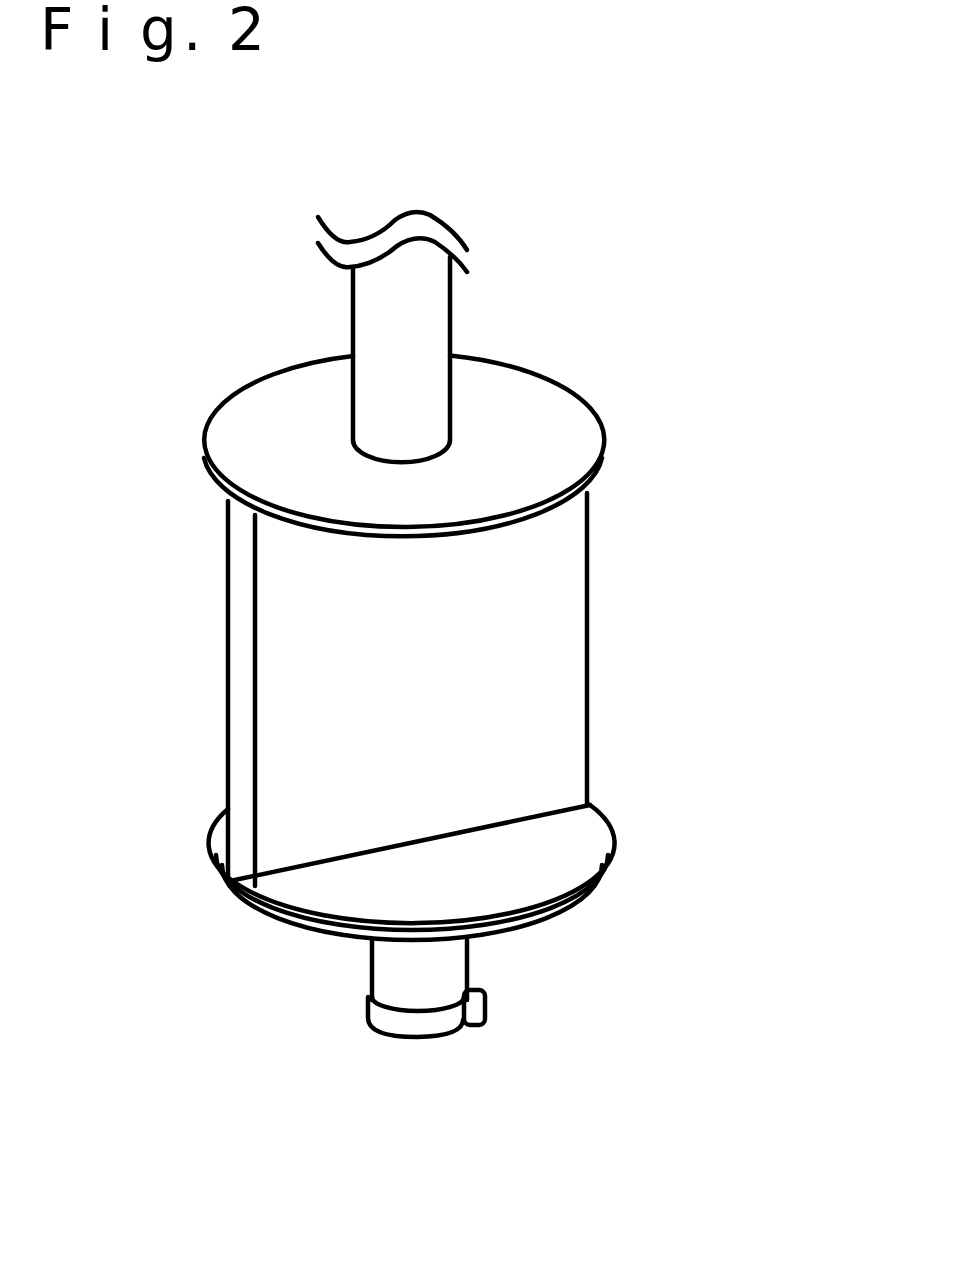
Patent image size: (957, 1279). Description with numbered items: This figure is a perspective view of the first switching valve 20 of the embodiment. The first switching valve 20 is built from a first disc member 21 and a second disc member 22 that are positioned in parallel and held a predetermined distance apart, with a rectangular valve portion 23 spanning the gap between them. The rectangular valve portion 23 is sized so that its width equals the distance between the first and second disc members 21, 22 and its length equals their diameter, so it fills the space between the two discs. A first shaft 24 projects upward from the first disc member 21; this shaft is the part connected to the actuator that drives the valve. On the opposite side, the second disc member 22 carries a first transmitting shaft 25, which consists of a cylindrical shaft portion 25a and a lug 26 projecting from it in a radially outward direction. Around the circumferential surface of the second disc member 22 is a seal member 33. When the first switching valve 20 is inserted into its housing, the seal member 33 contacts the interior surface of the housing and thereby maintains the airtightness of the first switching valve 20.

The first switching valve 20 is at (727, 487).
The first disc member 21 is at (543, 437).
The second disc member 22 is at (557, 853).
The rectangular valve portion 23 is at (552, 685).
The first shaft 24 is at (400, 312).
The first transmitting shaft 25 is at (375, 1033).
The cylindrical shaft portion 25a is at (447, 970).
The lug 26 is at (480, 1020).
The seal member 33 is at (237, 900).